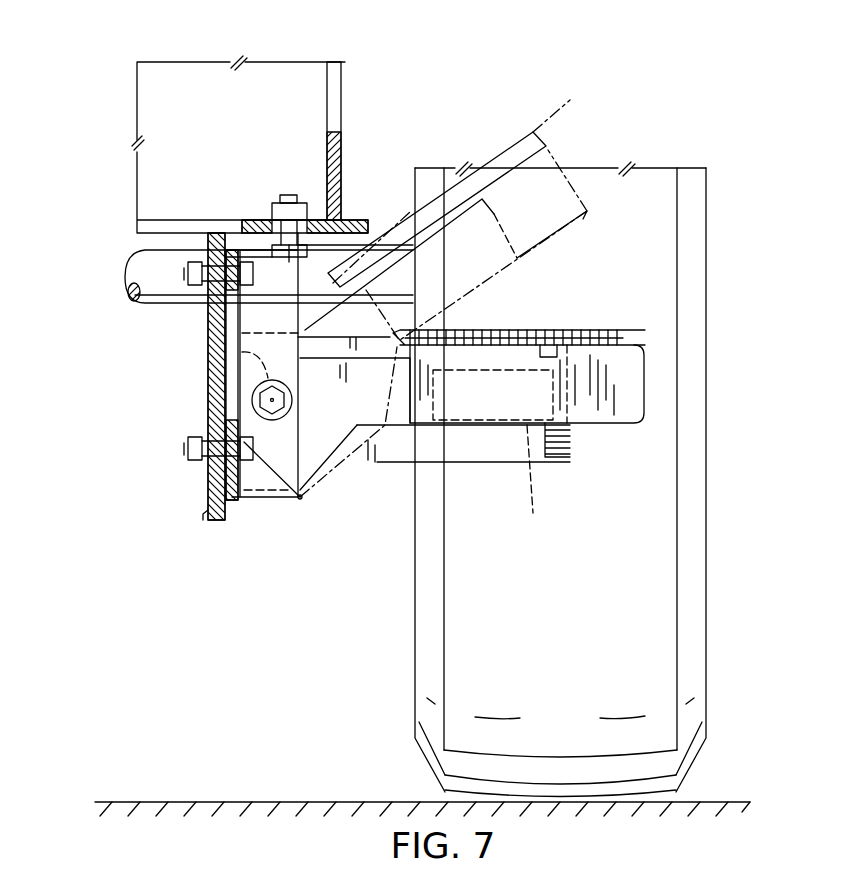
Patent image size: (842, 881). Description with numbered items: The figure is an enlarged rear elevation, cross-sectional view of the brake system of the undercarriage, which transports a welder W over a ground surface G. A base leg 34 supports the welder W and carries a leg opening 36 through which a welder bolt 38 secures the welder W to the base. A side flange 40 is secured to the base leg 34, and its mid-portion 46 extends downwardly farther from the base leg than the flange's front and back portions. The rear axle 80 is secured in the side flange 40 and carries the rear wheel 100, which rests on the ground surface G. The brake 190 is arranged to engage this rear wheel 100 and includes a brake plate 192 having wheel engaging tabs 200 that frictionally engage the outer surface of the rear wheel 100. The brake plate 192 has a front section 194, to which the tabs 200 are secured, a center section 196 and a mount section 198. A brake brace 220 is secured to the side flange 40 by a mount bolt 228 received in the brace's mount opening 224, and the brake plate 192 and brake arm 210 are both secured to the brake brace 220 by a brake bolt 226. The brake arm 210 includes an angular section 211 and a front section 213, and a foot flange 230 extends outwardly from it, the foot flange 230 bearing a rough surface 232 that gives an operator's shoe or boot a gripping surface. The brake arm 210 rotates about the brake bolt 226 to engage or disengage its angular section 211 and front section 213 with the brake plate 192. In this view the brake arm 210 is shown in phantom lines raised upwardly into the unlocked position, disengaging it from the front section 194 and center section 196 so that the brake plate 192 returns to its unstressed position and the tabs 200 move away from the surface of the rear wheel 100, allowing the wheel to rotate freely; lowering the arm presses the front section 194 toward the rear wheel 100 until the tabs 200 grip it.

The base leg 34 is at (353, 224).
The leg opening 36 is at (275, 218).
The welder bolt 38 is at (279, 203).
The side flange 40 is at (205, 514).
The mid-portion 46 is at (222, 490).
The rear axle 80 is at (160, 305).
The rear wheel 100 is at (665, 650).
The brake 190 is at (658, 338).
The brake plate 192 is at (398, 465).
The front section 194 is at (528, 482).
The center section 196 is at (362, 450).
The mount section 198 is at (245, 352).
The wheel engaging tab 200 is at (574, 330).
The brake arm 210 is at (650, 400).
The angular section 211 is at (470, 398).
The front section 213 is at (567, 395).
The brake brace 220 is at (262, 498).
The mount opening 224 is at (346, 436).
The brake bolt 226 is at (262, 400).
The mount bolt 228 is at (187, 273).
The foot flange 230 is at (519, 135).
The rough surface 232 is at (512, 328).
The welder W is at (170, 78).
The ground surface G is at (236, 801).